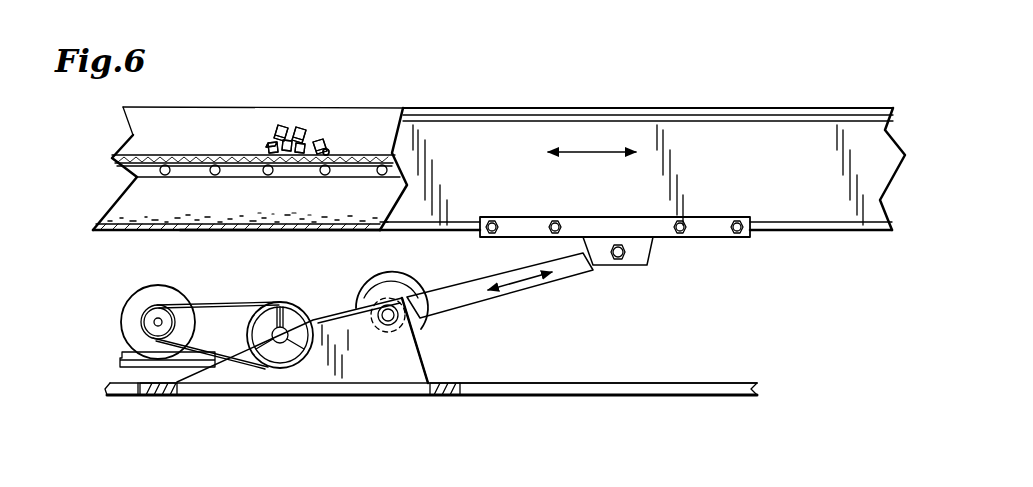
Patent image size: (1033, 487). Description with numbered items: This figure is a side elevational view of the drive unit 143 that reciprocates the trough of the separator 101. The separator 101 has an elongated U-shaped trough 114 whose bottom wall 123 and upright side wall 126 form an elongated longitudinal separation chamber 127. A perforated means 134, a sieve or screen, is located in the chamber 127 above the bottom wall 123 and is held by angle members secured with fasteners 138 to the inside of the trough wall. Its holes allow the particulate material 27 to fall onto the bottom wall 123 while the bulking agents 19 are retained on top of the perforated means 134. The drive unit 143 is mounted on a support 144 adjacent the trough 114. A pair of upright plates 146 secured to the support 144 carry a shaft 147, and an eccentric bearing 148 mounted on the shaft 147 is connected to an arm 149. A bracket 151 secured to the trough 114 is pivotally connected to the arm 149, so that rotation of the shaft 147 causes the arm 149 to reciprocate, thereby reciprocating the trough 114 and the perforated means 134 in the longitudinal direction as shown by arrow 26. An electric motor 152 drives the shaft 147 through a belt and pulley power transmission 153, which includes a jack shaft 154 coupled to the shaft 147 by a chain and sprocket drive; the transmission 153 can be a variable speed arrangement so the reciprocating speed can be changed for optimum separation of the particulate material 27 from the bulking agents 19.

The separator 101 is at (775, 60).
The perforated means 134 is at (133, 138).
The fasteners 138 is at (214, 152).
The trough 114 is at (304, 110).
The bulking agents 19 is at (310, 132).
The particulate material 27 is at (213, 218).
The separation space or chamber 127 is at (236, 209).
The arrow 26 is at (583, 157).
The side wall 126 is at (807, 206).
The bottom wall 123 is at (223, 233).
The motor 152 is at (140, 292).
The belt and pulley power transmission 153 is at (247, 307).
The jack shaft 154 is at (280, 343).
The drive unit 143 is at (352, 405).
The shaft 147 is at (381, 326).
The upright plates 146 is at (410, 366).
The eccentric bearing 148 is at (425, 317).
The arm 149 is at (523, 292).
The bracket 151 is at (648, 253).
The support 144 is at (584, 383).